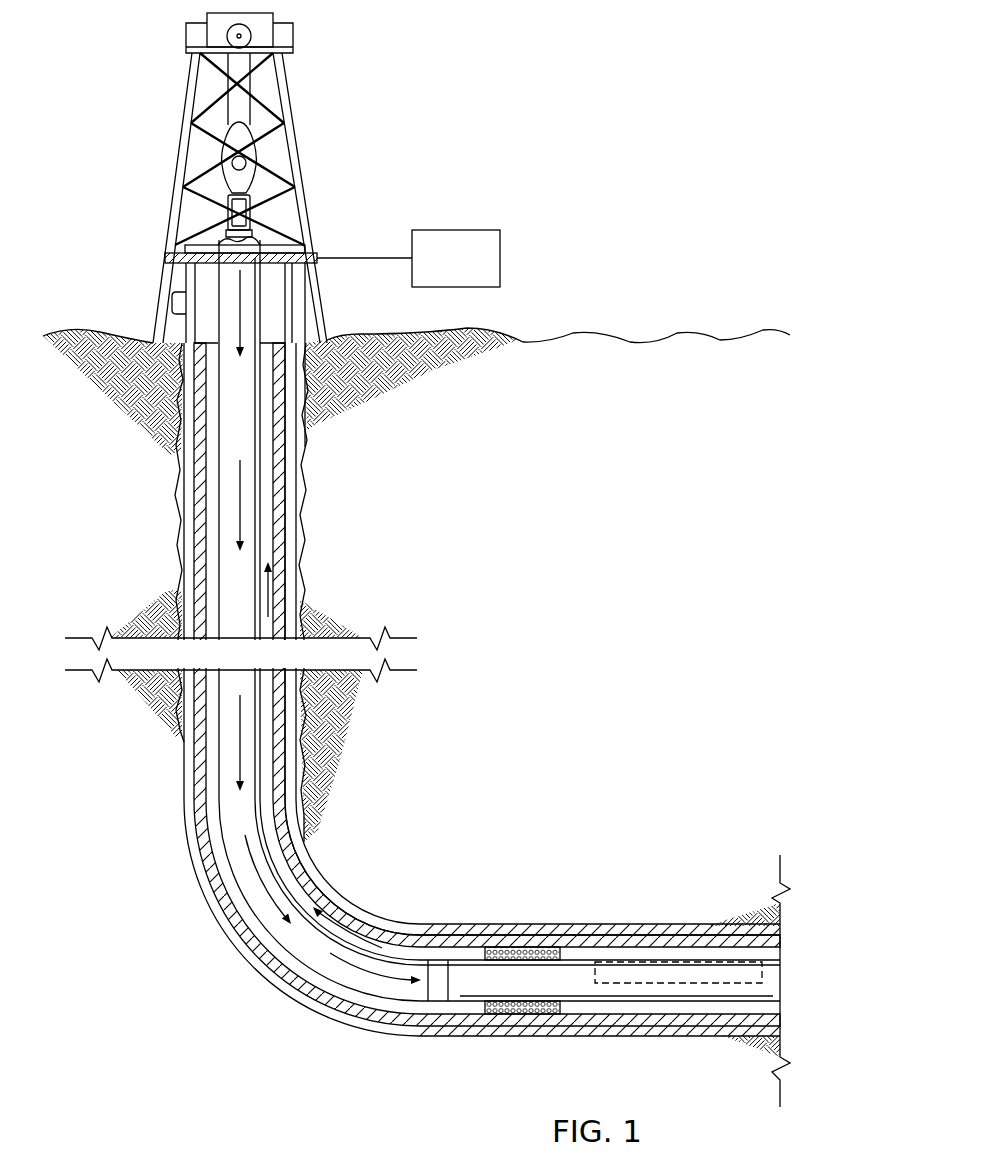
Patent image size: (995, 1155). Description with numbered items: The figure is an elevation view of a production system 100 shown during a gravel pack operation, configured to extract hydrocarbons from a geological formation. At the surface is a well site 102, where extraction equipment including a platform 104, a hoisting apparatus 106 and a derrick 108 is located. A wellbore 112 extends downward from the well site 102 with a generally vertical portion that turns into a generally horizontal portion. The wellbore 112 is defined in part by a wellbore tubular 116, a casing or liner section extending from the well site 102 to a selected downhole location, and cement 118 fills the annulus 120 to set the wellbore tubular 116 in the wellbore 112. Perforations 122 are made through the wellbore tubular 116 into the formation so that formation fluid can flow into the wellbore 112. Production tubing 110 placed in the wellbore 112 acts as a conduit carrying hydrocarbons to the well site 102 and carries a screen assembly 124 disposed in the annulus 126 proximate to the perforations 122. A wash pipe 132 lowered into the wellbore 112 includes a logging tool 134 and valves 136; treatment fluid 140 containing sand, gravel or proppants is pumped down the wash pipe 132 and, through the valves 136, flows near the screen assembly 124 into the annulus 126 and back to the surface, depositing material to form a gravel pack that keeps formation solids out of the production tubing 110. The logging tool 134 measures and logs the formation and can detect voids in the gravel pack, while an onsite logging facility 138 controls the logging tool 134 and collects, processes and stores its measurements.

The production system 100 is at (549, 59).
The well site 102 is at (163, 55).
The platform 104 is at (290, 250).
The hoisting apparatus 106 is at (222, 152).
The derrick 108 is at (297, 35).
The production tubing 110 is at (202, 510).
The wellbore 112 is at (185, 818).
The wellbore tubular 116 is at (185, 560).
The cement 118 is at (300, 534).
The annulus 120 is at (305, 472).
The perforations 122 is at (543, 950).
The screen assembly 124 is at (495, 950).
The annulus 126 is at (278, 963).
The wash pipe 132 is at (272, 510).
The logging tool 134 is at (672, 985).
The valves 136 is at (440, 975).
The logging facility 138 is at (437, 272).
The treatment fluid 140 is at (240, 308).